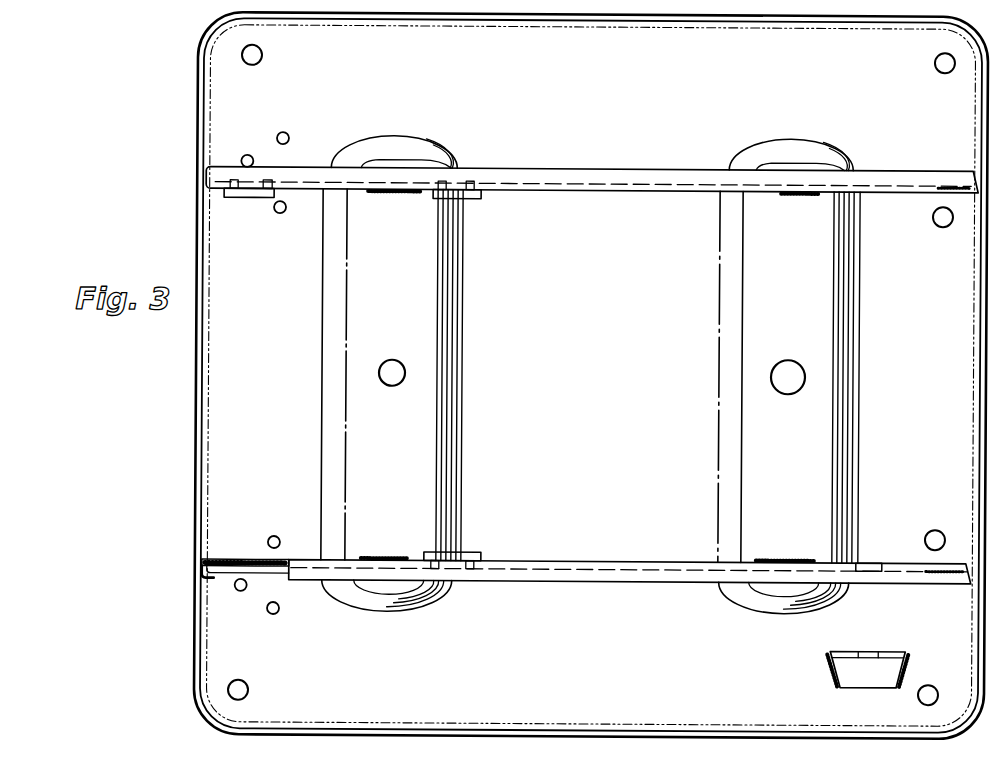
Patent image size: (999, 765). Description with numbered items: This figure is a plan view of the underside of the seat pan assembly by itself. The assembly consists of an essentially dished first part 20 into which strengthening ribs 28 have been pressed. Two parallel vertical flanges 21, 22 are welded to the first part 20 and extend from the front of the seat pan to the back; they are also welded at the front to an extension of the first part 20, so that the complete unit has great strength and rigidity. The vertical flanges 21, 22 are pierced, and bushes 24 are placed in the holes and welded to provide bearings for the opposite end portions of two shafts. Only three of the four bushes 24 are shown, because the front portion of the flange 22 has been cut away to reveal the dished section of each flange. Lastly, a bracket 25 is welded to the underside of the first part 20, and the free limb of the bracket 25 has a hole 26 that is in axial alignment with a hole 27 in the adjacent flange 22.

The first part 20 is at (268, 663).
The flange 21 is at (603, 168).
The flange 22 is at (610, 574).
The bushes 24 is at (251, 200).
The bracket 25 is at (856, 676).
The hole 26 is at (872, 650).
The hole 27 is at (876, 561).
The strengthening ribs 28 is at (430, 600).